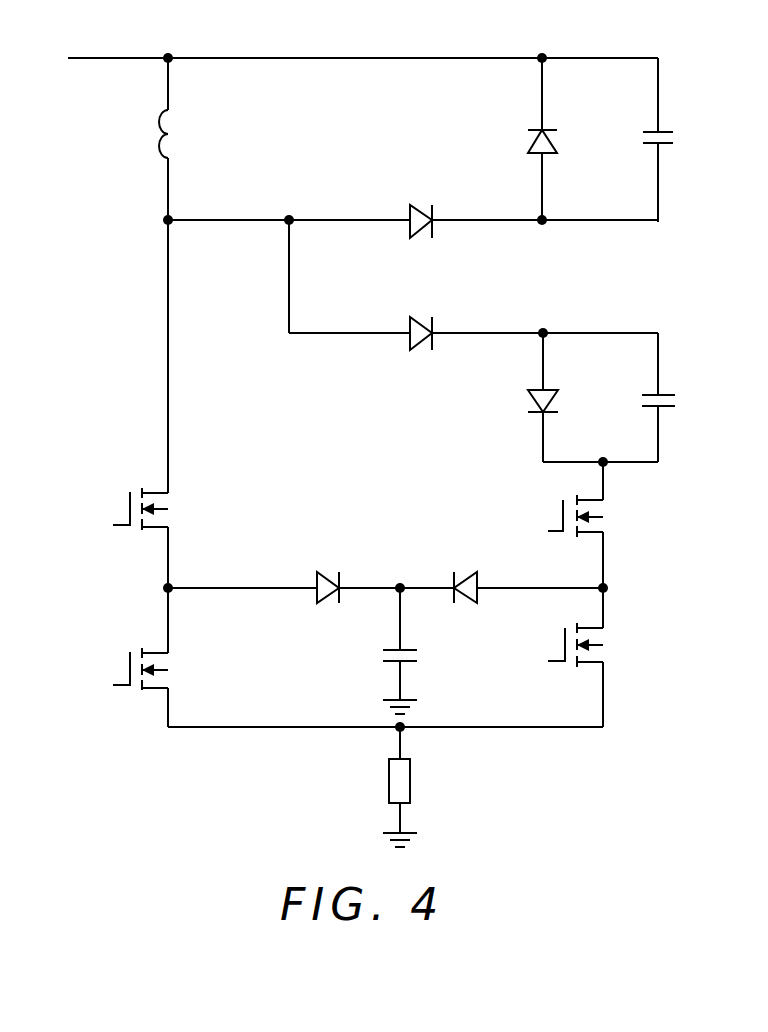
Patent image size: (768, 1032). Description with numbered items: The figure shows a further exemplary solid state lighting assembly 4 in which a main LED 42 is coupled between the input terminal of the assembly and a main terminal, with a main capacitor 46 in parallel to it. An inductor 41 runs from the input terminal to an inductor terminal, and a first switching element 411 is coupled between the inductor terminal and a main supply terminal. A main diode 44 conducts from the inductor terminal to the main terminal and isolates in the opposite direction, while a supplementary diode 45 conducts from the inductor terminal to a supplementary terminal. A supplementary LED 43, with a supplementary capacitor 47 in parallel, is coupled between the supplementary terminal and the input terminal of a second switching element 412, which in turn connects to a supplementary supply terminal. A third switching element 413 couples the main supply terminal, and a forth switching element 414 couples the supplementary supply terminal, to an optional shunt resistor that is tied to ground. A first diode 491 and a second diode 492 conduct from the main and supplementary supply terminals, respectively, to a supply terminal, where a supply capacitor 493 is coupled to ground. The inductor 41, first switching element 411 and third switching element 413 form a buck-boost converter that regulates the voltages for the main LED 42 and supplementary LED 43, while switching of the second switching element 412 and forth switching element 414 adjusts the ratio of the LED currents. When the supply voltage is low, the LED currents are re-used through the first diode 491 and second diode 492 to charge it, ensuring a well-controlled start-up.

The solid state lighting assembly 4 is at (96, 342).
The inductor 41 is at (135, 142).
The main LED 42 is at (518, 140).
The supplementary LED 43 is at (522, 400).
The main diode 44 is at (420, 202).
The supplementary diode 45 is at (420, 352).
The main capacitor 46 is at (677, 137).
The supplementary capacitor 47 is at (680, 400).
The first switching element 411 is at (115, 503).
The second switching element 412 is at (615, 512).
The third switching element 413 is at (115, 665).
The forth switching element 414 is at (615, 638).
The first diode 491 is at (326, 567).
The second diode 492 is at (463, 567).
The supply capacitor 493 is at (422, 656).